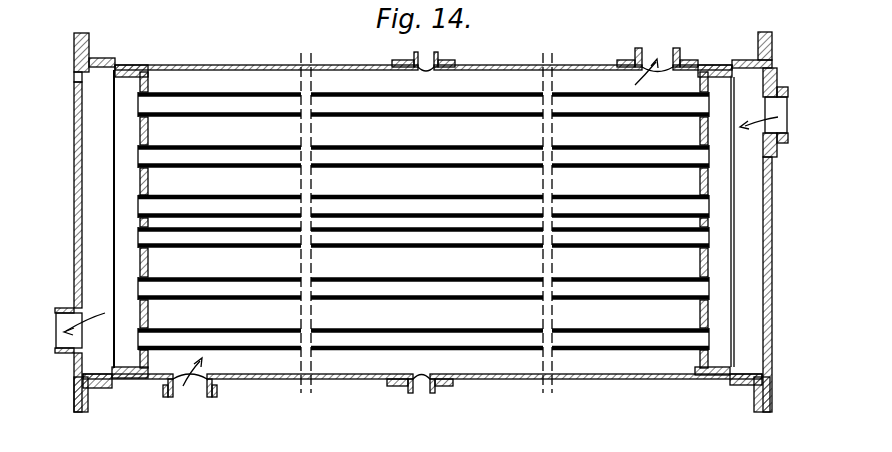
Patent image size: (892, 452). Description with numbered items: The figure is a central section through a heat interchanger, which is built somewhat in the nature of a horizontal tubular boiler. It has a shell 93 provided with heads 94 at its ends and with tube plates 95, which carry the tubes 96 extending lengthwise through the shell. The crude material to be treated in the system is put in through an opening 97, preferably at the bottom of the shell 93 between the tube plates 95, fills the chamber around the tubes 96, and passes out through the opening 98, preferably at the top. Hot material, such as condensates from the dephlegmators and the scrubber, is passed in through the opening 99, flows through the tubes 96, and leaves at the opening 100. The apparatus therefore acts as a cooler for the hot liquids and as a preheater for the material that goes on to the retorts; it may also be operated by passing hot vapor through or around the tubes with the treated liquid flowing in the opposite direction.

The shell 93 is at (497, 380).
The heads 94 is at (770, 315).
The tube plates 95 is at (708, 257).
The tubes 96 is at (703, 157).
The opening 97 is at (193, 390).
The opening 98 is at (672, 44).
The opening 99 is at (802, 86).
The opening 100 is at (55, 312).